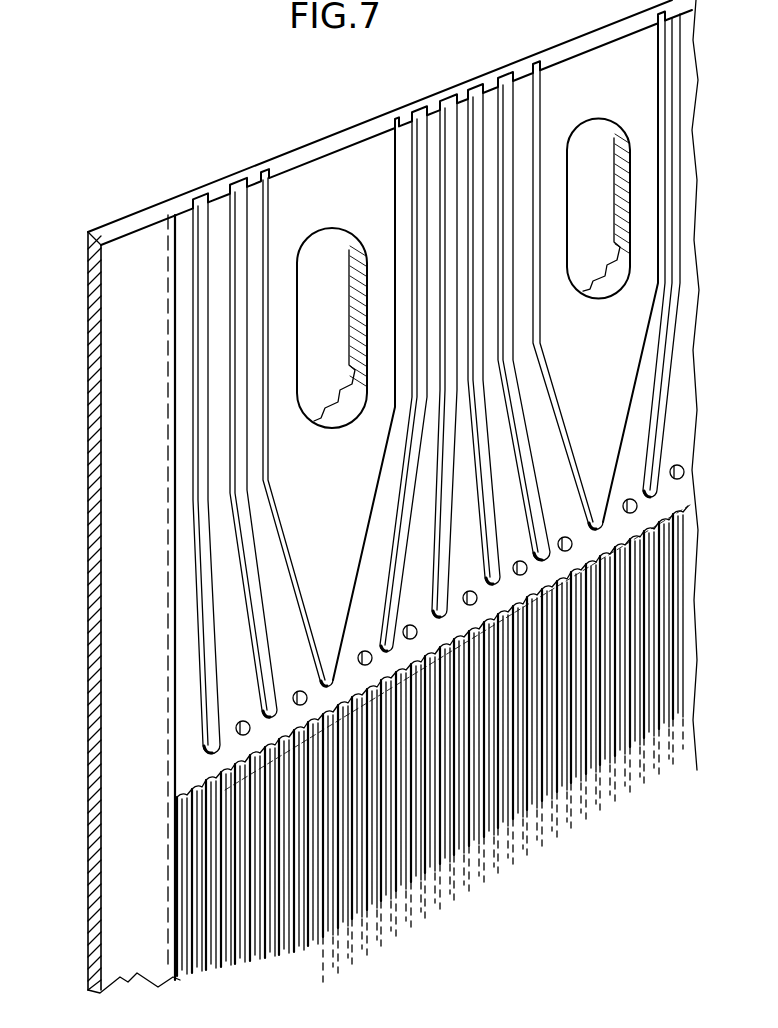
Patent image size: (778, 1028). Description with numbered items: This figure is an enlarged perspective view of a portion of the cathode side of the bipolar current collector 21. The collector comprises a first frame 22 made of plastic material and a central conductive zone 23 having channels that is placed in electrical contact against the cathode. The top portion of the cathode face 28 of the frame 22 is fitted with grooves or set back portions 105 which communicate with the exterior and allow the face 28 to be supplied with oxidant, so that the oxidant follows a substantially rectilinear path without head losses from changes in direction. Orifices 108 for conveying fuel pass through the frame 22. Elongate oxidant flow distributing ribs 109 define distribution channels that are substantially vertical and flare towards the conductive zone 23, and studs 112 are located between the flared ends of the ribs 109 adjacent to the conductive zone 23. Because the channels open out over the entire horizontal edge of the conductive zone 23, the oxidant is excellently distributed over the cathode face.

The bipolar current collector 21 is at (190, 178).
The first frame 22 is at (122, 735).
The central conductive zone 23 is at (284, 866).
The cathode face 28 is at (152, 249).
The grooves or set back portions 105 is at (405, 130).
The fuel conveying orifices 108 is at (333, 258).
The oxidant flow distributing ribs 109 is at (437, 480).
The studs 112 is at (293, 702).